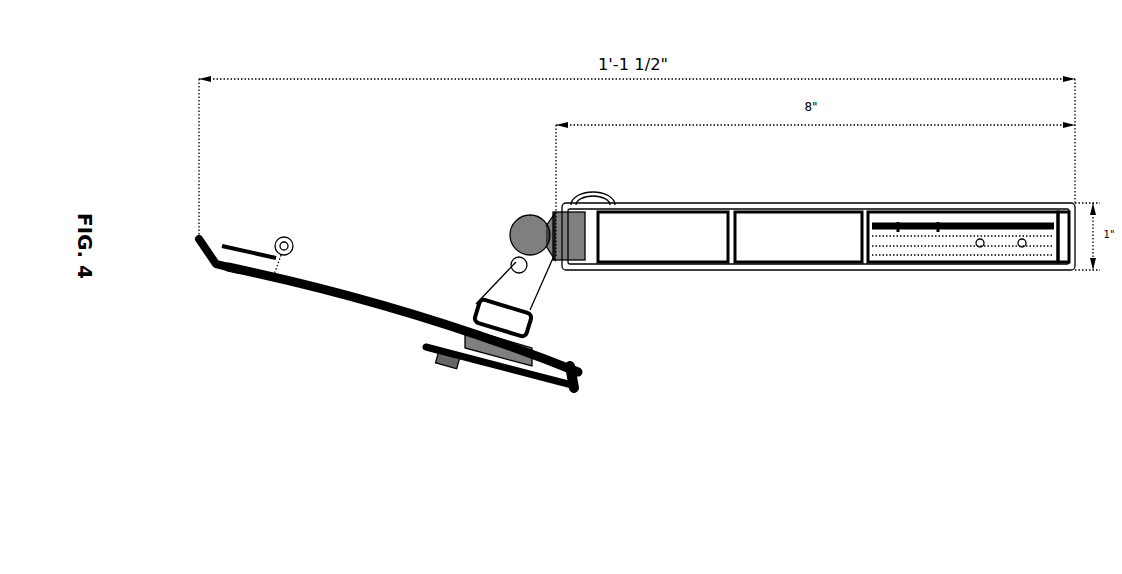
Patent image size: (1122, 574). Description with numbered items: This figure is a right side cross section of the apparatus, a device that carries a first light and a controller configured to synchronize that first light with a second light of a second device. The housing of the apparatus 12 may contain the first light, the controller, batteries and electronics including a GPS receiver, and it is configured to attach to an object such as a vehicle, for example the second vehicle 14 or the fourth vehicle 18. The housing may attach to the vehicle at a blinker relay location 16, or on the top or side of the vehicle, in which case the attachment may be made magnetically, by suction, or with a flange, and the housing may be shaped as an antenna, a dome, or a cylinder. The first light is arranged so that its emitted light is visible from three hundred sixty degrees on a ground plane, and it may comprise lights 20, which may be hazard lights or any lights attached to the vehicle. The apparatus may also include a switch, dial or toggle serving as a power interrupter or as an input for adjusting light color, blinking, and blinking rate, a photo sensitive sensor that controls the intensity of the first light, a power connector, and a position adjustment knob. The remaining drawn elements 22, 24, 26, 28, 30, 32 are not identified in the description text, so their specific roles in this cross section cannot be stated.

The apparatus 12 is at (236, 274).
The second vehicle 14 is at (308, 300).
The blinker relay location 16 is at (444, 370).
The fourth vehicle 18 is at (500, 340).
The lights 20 is at (547, 242).
The housing 22 is at (598, 205).
The first compartment 24 is at (663, 243).
The second compartment 26 is at (772, 243).
The third compartment 28 is at (900, 230).
The hooks 30 is at (938, 228).
The end cap 32 is at (1075, 243).